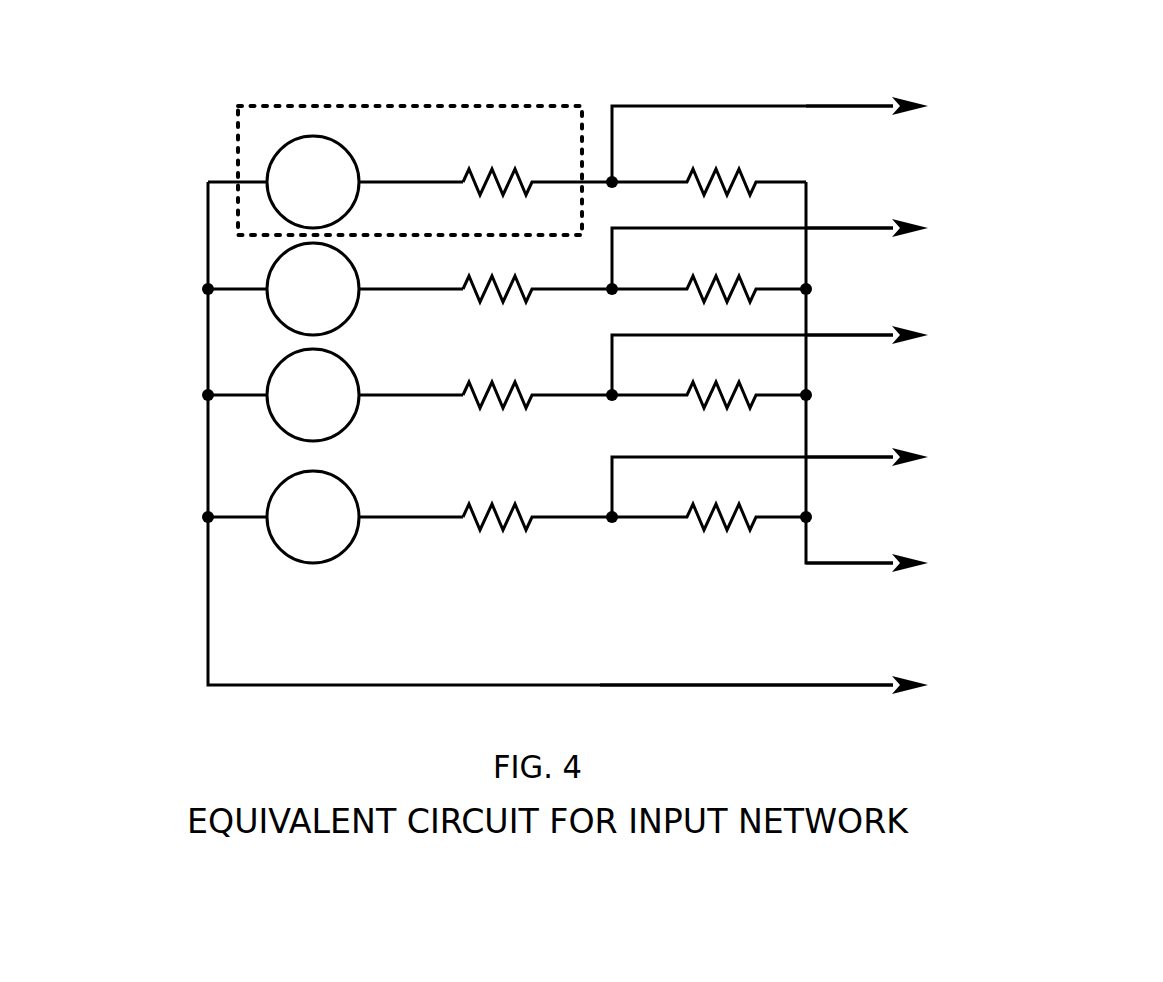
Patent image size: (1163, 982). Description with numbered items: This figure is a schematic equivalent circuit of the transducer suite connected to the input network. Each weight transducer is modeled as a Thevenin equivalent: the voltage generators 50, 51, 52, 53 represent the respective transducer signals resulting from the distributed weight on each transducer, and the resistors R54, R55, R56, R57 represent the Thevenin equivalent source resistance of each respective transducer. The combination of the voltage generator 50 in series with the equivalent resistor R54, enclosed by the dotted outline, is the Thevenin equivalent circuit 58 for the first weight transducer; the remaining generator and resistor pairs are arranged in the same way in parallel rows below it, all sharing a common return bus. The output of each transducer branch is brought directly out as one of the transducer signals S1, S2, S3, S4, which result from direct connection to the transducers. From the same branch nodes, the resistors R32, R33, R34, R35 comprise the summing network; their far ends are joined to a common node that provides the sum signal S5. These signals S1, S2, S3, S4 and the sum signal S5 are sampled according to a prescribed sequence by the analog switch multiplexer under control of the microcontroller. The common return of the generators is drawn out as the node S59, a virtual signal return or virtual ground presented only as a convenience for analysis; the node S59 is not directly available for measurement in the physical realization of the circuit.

The Thevenin equivalent circuit 58 is at (238, 143).
The voltage generator 50 is at (329, 197).
The voltage generator 51 is at (329, 304).
The voltage generator 52 is at (329, 410).
The voltage generator 53 is at (329, 532).
The resistor R54 is at (537, 166).
The resistor R55 is at (537, 273).
The resistor R56 is at (537, 379).
The resistor R57 is at (537, 501).
The summing network resistor R32 is at (709, 166).
The summing network resistor R33 is at (709, 273).
The summing network resistor R34 is at (709, 379).
The summing network resistor R35 is at (709, 501).
The transducer signal S1 is at (852, 106).
The transducer signal S2 is at (852, 228).
The transducer signal S3 is at (852, 335).
The transducer signal S4 is at (852, 457).
The sum signal S5 is at (852, 563).
The virtual signal return node S59 is at (852, 685).